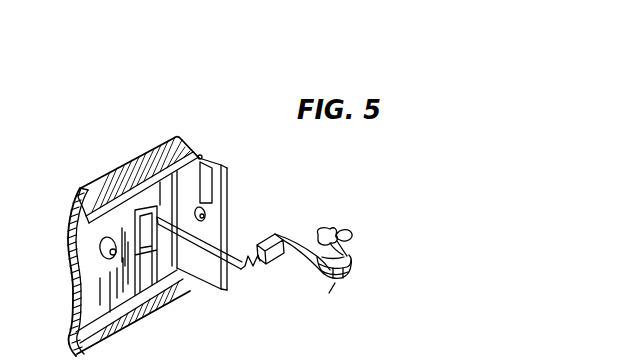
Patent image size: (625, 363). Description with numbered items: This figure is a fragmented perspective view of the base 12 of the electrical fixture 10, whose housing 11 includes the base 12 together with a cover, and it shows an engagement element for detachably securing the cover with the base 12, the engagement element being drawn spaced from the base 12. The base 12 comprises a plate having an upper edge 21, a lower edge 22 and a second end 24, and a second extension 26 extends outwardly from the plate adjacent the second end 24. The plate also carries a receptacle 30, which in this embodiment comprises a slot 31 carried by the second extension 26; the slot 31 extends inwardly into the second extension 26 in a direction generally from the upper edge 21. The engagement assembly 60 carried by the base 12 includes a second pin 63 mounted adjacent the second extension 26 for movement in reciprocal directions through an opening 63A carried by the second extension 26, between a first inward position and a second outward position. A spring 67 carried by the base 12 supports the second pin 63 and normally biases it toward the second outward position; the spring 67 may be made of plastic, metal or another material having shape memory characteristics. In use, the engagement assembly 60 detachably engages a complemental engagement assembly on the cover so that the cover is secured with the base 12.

The electrical fixture 10 is at (194, 183).
The housing 11 is at (179, 137).
The base 12 is at (100, 198).
The upper edge 21 is at (142, 150).
The lower edge 22 is at (146, 308).
The second end 24 is at (202, 155).
The second extension 26 is at (201, 270).
The receptacle 30 is at (211, 194).
The slot 31 is at (223, 177).
The engagement assembly 60 is at (331, 261).
The second pin 63 is at (377, 238).
The opening 63A is at (215, 222).
The spring 67 is at (300, 267).